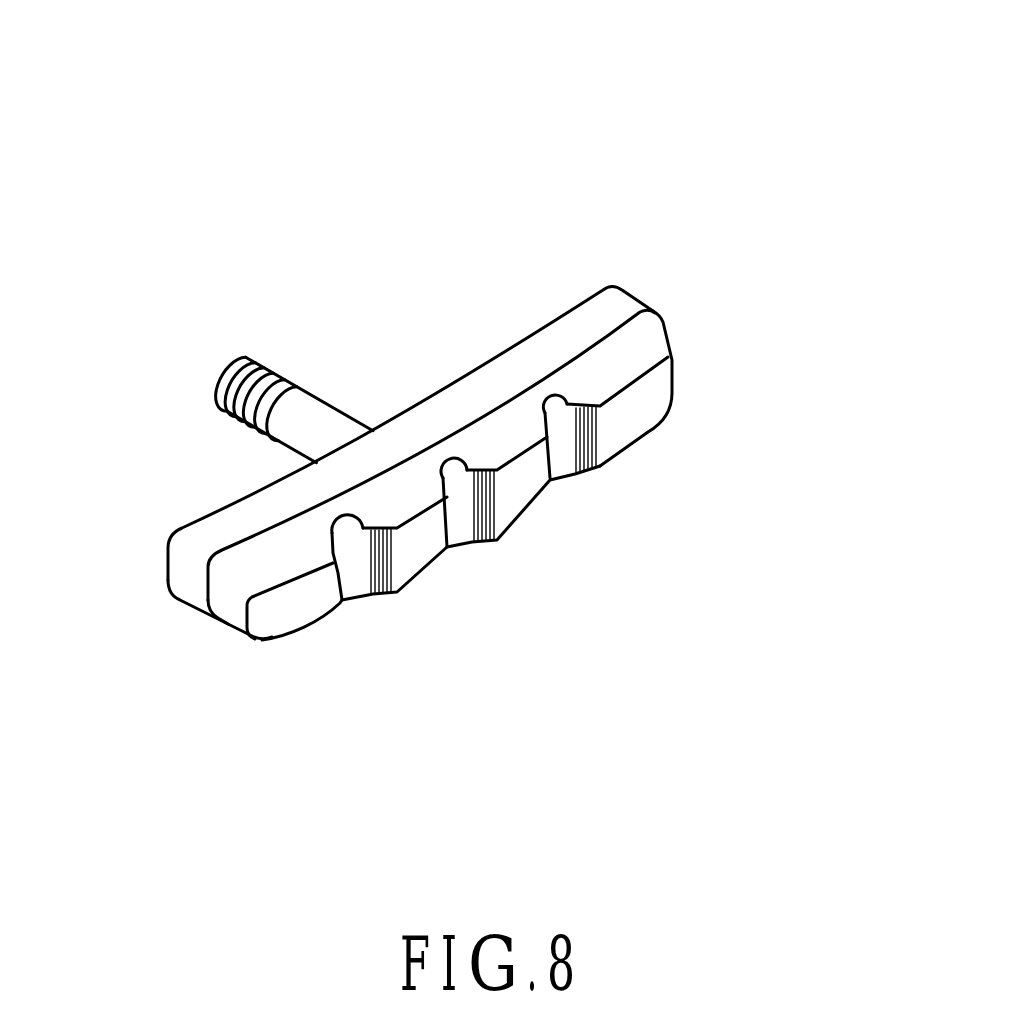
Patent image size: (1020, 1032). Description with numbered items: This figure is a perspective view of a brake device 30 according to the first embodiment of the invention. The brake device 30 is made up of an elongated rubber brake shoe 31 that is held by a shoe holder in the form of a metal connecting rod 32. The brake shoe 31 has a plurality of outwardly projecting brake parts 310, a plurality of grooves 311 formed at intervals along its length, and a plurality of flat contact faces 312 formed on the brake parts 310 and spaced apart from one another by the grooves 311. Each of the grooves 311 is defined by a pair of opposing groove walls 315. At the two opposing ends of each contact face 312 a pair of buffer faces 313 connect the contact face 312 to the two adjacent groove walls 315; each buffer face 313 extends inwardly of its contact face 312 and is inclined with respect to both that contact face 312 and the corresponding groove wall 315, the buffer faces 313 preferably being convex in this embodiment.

The brake device 30 is at (523, 302).
The brake shoe 31 is at (493, 387).
The connecting rod 32 is at (257, 363).
The brake parts 310 is at (642, 343).
The grooves 311 is at (558, 407).
The contact faces 312 is at (413, 563).
The buffer faces 313 is at (379, 528).
The groove walls 315 is at (552, 460).